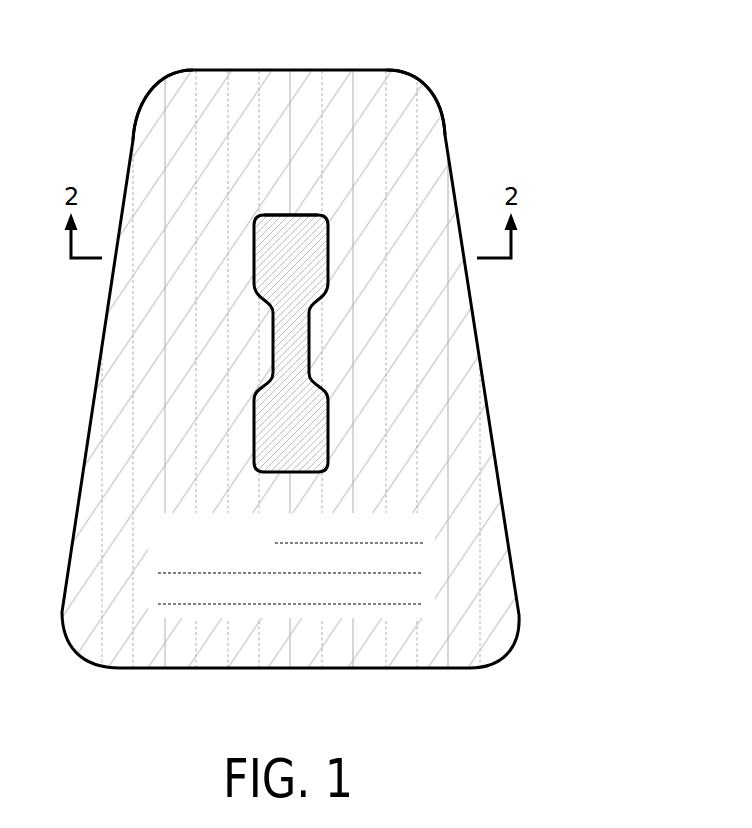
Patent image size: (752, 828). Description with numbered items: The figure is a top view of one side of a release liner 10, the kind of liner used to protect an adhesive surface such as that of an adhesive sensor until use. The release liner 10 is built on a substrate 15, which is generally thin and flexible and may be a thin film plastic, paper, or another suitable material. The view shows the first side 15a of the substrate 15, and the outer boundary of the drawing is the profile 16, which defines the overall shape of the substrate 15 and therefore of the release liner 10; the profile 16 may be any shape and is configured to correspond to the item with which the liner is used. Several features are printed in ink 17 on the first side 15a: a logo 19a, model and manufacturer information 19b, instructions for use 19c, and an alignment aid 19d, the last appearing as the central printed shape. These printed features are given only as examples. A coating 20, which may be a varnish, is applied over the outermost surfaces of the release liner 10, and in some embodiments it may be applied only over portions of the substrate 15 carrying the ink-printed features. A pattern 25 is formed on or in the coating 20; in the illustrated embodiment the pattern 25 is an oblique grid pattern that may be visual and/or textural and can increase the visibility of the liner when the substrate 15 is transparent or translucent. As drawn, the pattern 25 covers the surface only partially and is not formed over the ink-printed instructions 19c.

The release liner 10 is at (542, 39).
The substrate 15 is at (432, 152).
The first side 15a is at (148, 157).
The profile 16 is at (433, 97).
The ink 17 is at (297, 418).
The logo 19a is at (158, 322).
The model and manufacturer information 19b is at (440, 323).
The instructions for use 19c is at (245, 588).
The alignment aid 19d is at (282, 213).
The coating 20 is at (398, 205).
The pattern 25 is at (227, 110).